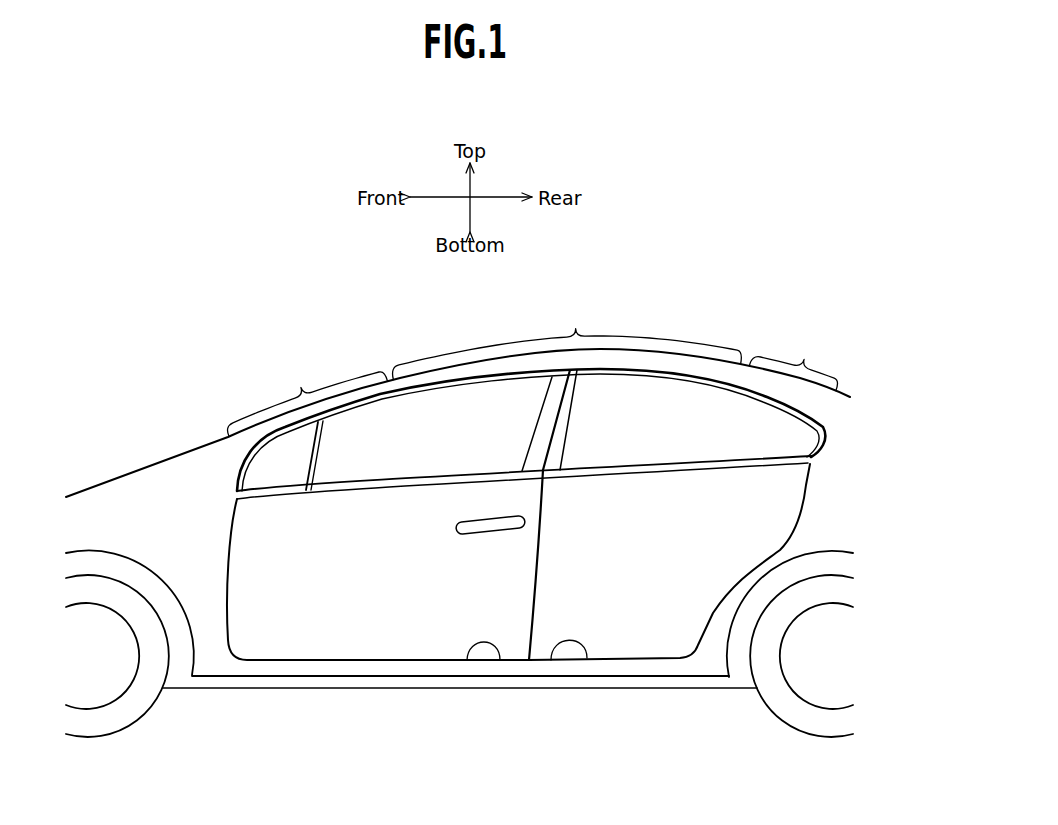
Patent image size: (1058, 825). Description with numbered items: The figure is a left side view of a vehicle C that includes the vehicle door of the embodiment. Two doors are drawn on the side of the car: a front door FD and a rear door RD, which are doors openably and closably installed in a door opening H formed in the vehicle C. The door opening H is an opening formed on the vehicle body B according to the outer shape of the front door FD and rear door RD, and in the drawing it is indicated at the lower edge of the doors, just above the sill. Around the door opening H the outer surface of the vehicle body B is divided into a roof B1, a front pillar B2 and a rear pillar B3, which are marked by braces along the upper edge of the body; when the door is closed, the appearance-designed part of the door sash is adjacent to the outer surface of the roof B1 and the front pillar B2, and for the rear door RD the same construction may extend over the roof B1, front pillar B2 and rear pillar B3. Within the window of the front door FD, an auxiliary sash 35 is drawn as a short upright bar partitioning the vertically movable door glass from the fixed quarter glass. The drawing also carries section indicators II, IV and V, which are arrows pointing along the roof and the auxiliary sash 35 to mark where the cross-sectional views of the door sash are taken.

The vehicle C is at (313, 310).
The vehicle body B is at (120, 503).
The roof B1 is at (567, 339).
The front pillar B2 is at (308, 395).
The rear pillar B3 is at (793, 358).
The auxiliary sash 35 is at (320, 446).
The front door FD is at (373, 600).
The rear door RD is at (637, 600).
The door opening H is at (551, 660).
The section line II is at (512, 335).
The section line IV is at (380, 348).
The section line V is at (257, 398).